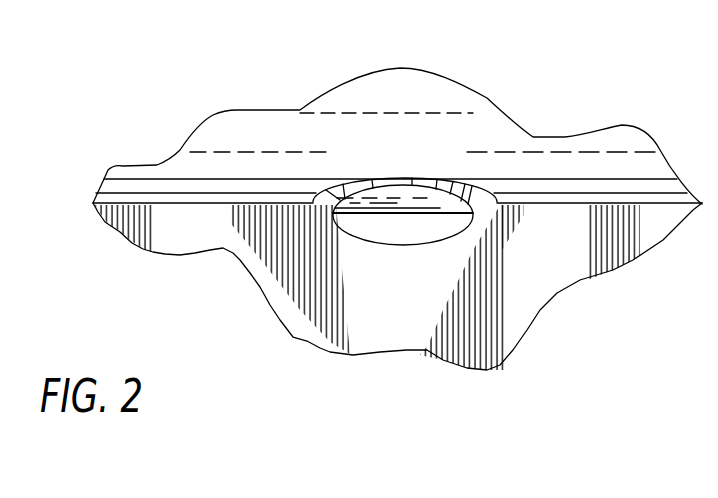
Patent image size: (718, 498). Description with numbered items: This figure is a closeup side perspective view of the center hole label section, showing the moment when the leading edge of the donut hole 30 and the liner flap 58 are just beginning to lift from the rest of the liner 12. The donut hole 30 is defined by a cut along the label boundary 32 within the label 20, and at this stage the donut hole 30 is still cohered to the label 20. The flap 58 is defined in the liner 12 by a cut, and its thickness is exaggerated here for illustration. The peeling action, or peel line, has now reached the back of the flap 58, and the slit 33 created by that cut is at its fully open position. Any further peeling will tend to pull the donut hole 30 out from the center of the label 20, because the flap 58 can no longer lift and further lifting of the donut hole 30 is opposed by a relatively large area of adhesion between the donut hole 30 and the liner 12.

The liner 12 is at (523, 288).
The label 20 is at (217, 167).
The donut hole 30 is at (437, 180).
The label boundary 32 is at (347, 182).
The slit 33 is at (400, 246).
The liner flap 58 is at (397, 185).